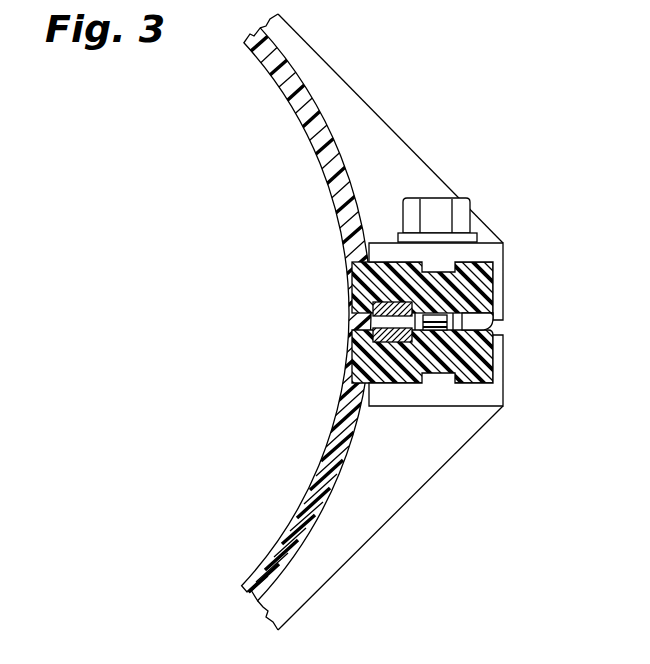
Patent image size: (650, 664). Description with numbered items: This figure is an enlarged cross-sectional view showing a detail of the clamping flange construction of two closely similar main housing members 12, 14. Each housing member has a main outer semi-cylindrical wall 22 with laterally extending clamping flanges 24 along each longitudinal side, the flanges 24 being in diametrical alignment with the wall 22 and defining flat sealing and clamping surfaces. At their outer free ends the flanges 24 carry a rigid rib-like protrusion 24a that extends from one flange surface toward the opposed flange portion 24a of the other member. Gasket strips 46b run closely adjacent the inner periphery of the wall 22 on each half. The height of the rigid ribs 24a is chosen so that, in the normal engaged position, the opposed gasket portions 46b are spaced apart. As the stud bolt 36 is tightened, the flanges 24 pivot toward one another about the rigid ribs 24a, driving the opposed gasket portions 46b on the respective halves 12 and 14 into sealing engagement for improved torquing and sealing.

The main housing member 12 is at (446, 99).
The main housing member 14 is at (410, 537).
The main outer semi-cylindrical wall 22 is at (313, 157).
The clamping flange 24 is at (503, 257).
The rib-like protrusion 24a is at (493, 320).
The stud bolt 36 is at (462, 200).
The longitudinally extending strip 46b is at (360, 298).